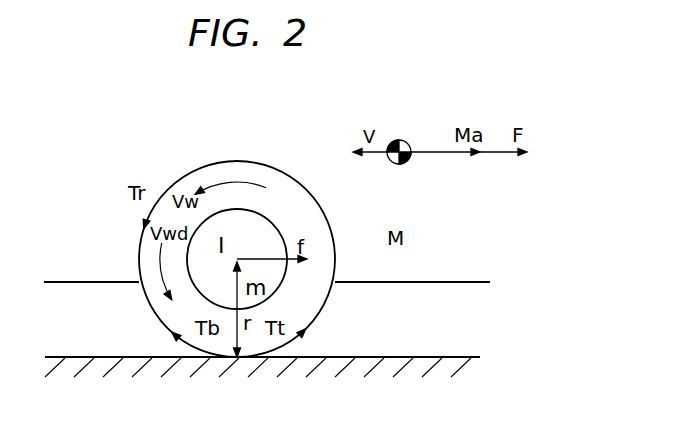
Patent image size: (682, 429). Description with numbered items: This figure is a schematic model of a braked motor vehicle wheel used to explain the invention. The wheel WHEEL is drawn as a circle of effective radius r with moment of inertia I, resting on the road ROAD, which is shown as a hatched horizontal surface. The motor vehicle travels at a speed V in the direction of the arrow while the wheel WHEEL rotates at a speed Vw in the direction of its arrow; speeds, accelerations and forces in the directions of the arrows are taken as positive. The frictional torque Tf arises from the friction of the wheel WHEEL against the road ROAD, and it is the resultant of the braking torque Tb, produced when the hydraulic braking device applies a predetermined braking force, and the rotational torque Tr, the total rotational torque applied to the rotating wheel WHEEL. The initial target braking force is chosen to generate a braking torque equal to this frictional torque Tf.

The wheel WHEEL is at (229, 161).
The road ROAD is at (376, 357).